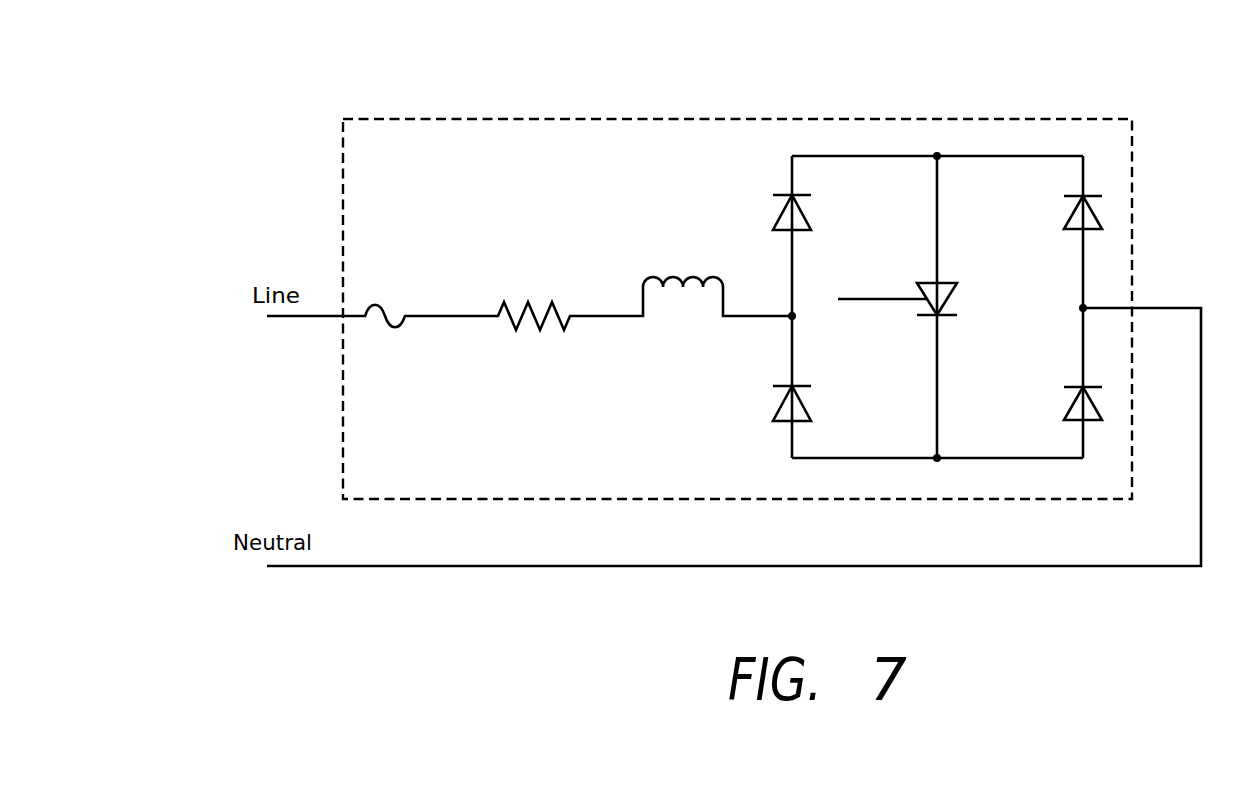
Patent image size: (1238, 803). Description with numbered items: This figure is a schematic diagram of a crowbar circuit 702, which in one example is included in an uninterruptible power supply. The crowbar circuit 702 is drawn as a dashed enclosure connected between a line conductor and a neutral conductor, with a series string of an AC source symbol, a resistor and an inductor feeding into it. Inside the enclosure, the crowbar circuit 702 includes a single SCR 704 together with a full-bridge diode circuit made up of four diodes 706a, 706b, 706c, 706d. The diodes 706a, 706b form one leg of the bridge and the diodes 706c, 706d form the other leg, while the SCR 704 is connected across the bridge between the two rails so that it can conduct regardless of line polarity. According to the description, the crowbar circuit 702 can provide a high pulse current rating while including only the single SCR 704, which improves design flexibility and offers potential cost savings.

The crowbar circuit 702 is at (767, 117).
The SCR 704 is at (917, 283).
The diode 706a is at (777, 216).
The diode 706b is at (777, 406).
The diode 706c is at (1071, 213).
The diode 706d is at (1071, 406).